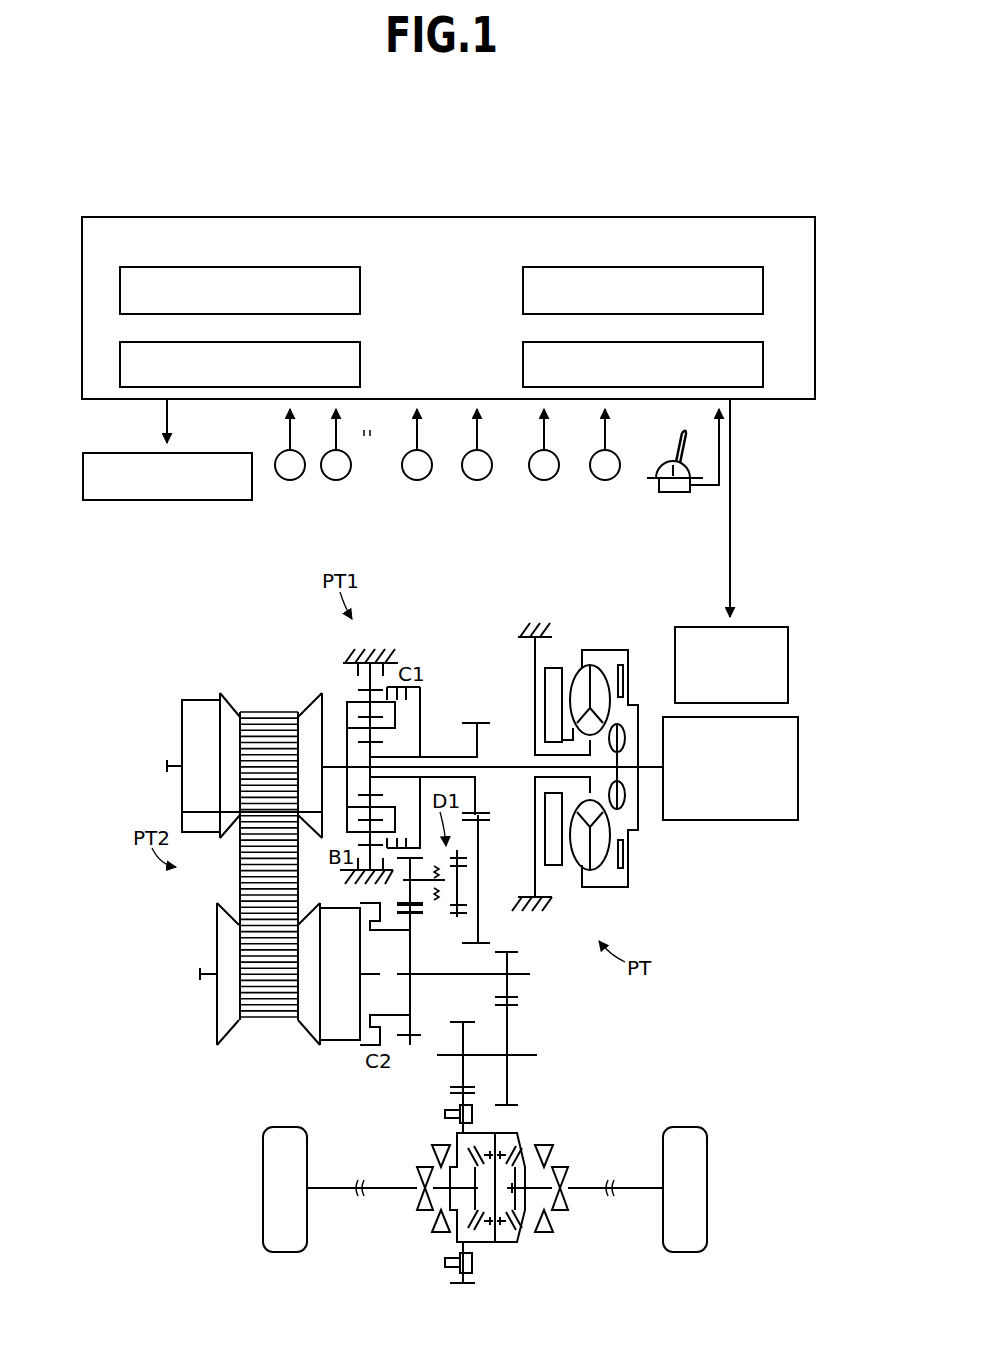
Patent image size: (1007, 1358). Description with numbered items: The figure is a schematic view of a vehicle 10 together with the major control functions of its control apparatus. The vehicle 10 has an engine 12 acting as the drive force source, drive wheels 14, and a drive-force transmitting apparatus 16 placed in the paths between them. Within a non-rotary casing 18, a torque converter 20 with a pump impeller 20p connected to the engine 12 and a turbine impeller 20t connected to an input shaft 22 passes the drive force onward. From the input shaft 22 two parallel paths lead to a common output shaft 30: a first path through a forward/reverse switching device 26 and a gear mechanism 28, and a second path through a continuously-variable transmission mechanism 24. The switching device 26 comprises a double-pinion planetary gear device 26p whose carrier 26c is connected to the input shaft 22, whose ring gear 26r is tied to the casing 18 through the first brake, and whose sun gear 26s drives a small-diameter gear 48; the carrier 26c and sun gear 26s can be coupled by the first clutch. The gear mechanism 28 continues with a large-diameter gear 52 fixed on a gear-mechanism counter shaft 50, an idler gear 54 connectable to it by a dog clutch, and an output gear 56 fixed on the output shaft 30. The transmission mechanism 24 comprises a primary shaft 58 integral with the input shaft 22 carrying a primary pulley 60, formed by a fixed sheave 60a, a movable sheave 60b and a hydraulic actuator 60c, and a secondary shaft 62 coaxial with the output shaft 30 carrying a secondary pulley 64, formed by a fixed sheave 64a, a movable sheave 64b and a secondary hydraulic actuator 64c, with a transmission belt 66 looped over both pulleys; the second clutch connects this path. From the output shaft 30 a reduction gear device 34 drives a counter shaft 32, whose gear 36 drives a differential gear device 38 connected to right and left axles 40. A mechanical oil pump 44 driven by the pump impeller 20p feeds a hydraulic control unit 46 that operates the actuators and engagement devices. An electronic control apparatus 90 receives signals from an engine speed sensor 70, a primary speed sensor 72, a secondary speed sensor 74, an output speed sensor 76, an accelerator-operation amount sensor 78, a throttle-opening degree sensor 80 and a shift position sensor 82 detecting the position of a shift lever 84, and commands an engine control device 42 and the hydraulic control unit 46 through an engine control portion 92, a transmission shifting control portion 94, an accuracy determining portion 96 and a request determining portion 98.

The vehicle 10 is at (718, 149).
The engine 12 is at (748, 815).
The drive wheels 14 is at (285, 1137).
The drive-force transmitting apparatus 16 is at (616, 574).
The casing 18 is at (368, 654).
The torque converter 20 is at (596, 637).
The pump impeller 20p is at (583, 848).
The turbine impeller 20t is at (600, 850).
The input shaft 22 is at (508, 765).
The continuously-variable transmission mechanism 24 is at (266, 656).
The forward/reverse switching device 26 is at (411, 650).
The planetary gear device 26p is at (340, 669).
The ring gear 26r is at (358, 681).
The sun gear 26s is at (402, 790).
The carrier 26c is at (397, 720).
The gear mechanism 28 is at (483, 664).
The output shaft 30 is at (435, 977).
The counter shaft 32 is at (523, 1055).
The reduction gear device 34 is at (547, 998).
The gear 36 is at (452, 1022).
The differential gear device 38 is at (497, 1249).
The axles 40 is at (376, 1188).
The engine control device 42 is at (753, 630).
The oil pump 44 is at (553, 668).
The hydraulic control unit 46 is at (203, 460).
The small-diameter gear 48 is at (468, 722).
The gear-mechanism counter shaft 50 is at (482, 880).
The large-diameter gear 52 is at (463, 945).
The idler gear 54 is at (430, 907).
The output gear 56 is at (415, 1038).
The primary shaft 58 is at (168, 769).
The primary pulley 60 is at (168, 737).
The fixed sheave 60a is at (312, 714).
The movable sheave 60b is at (232, 712).
The hydraulic actuator 60c is at (207, 715).
The secondary shaft 62 is at (203, 976).
The secondary pulley 64 is at (204, 950).
The fixed sheave 64a is at (223, 1026).
The movable sheave 64b is at (305, 1028).
The secondary hydraulic actuator 64c is at (337, 1030).
The transmission belt 66 is at (268, 1018).
The engine speed sensor 70 is at (290, 481).
The primary speed sensor 72 is at (336, 481).
The secondary speed sensor 74 is at (417, 481).
The output speed sensor 76 is at (477, 481).
The accelerator-operation amount sensor 78 is at (544, 481).
The throttle-opening degree sensor 80 is at (605, 481).
The shift position sensor 82 is at (670, 489).
The shift lever 84 is at (680, 440).
The electronic control apparatus 90 is at (753, 227).
The engine control portion 92 is at (312, 275).
The transmission shifting control portion 94 is at (355, 350).
The accuracy determining portion 96 is at (717, 275).
The request determining portion 98 is at (717, 350).